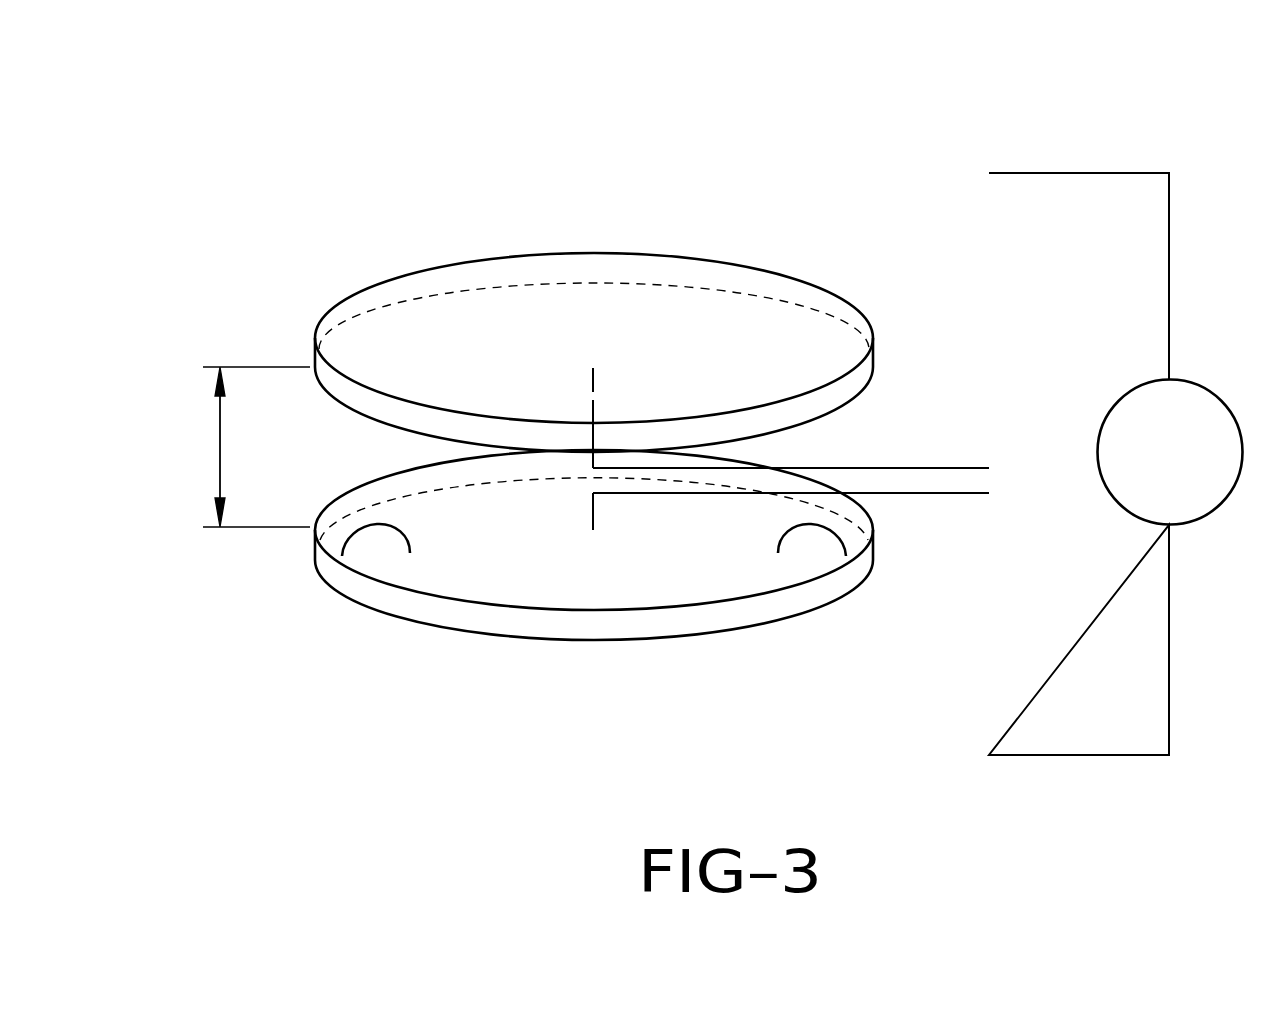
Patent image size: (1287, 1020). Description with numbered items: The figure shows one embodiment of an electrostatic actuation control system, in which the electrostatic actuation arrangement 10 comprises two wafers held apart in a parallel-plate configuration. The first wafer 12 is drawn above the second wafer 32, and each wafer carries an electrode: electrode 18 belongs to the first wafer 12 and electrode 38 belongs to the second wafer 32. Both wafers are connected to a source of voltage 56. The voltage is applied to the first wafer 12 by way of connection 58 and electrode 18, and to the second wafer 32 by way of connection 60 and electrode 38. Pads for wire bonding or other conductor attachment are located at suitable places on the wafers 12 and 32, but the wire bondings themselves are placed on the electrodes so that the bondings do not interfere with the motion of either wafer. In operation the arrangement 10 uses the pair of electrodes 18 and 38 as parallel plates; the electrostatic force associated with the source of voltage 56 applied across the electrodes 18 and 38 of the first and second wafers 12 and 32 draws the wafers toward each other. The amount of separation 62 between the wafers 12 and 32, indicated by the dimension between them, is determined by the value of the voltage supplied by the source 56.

The electrostatic actuation arrangement 10 is at (748, 148).
The first wafer 12 is at (395, 333).
The electrode 18 is at (874, 376).
The second wafer 32 is at (342, 556).
The electrode 38 is at (846, 556).
The source of voltage 56 is at (1218, 398).
The connection 58 is at (1072, 173).
The connection 60 is at (1073, 755).
The separation 62 is at (220, 527).